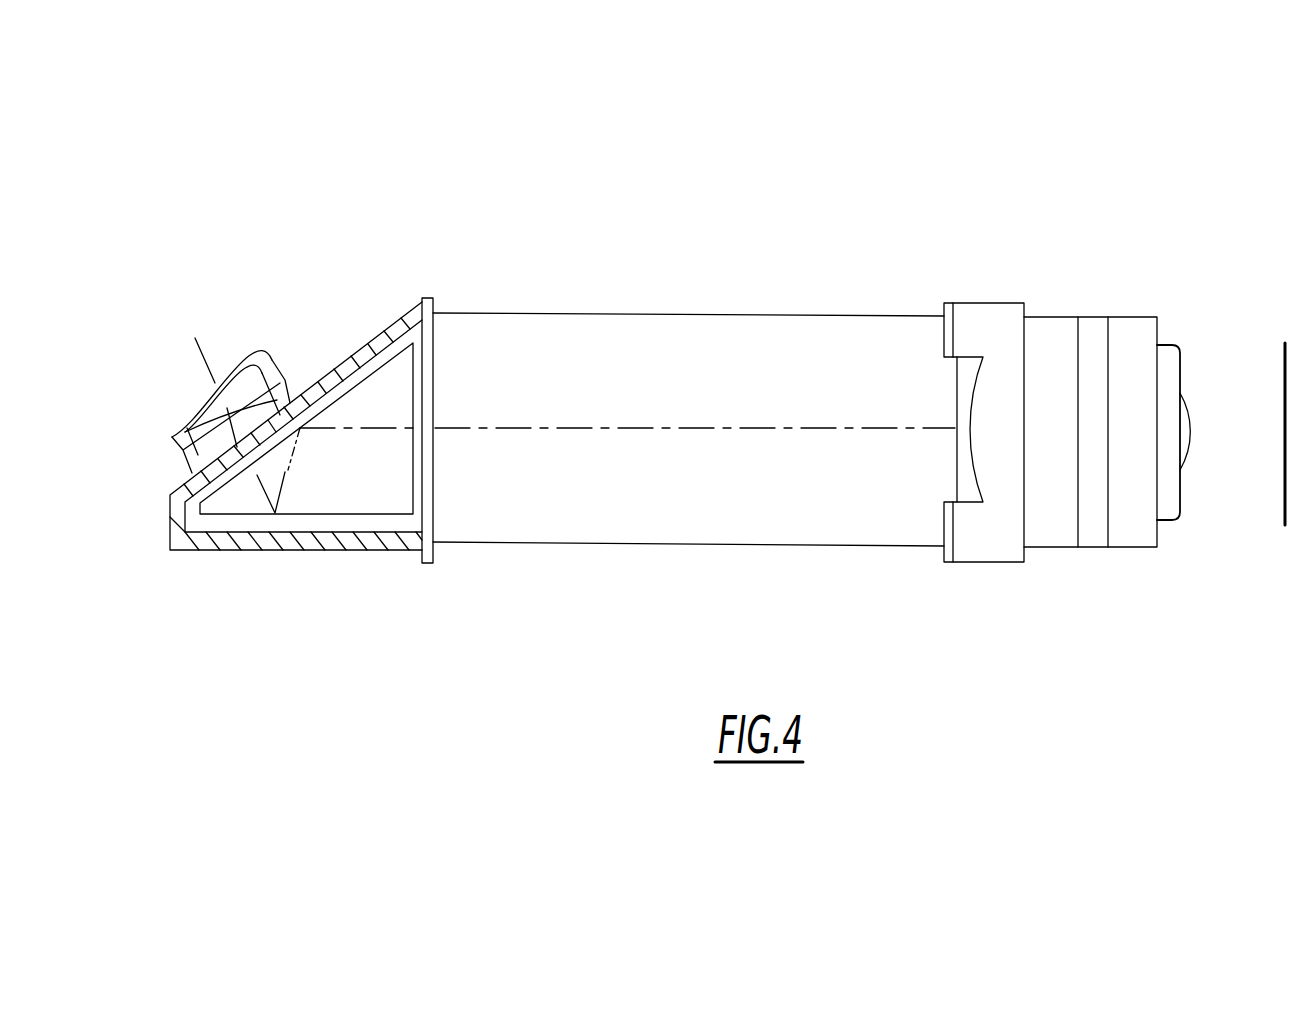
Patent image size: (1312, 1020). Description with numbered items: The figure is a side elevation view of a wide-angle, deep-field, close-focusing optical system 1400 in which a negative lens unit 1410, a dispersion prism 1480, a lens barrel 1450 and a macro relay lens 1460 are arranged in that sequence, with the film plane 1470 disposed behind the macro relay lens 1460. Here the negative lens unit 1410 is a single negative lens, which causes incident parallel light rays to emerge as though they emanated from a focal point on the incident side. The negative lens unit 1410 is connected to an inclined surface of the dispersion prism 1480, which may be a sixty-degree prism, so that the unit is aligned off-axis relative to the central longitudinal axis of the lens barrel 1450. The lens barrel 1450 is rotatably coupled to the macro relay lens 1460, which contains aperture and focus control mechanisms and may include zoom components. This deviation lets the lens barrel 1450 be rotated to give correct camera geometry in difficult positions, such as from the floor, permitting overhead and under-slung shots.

The optical system 1400 is at (855, 143).
The negative lens unit 1410 is at (222, 330).
The dispersion prism 1480 is at (360, 345).
The lens barrel 1450 is at (605, 314).
The macro relay lens 1460 is at (1083, 295).
The film plane 1470 is at (1283, 497).